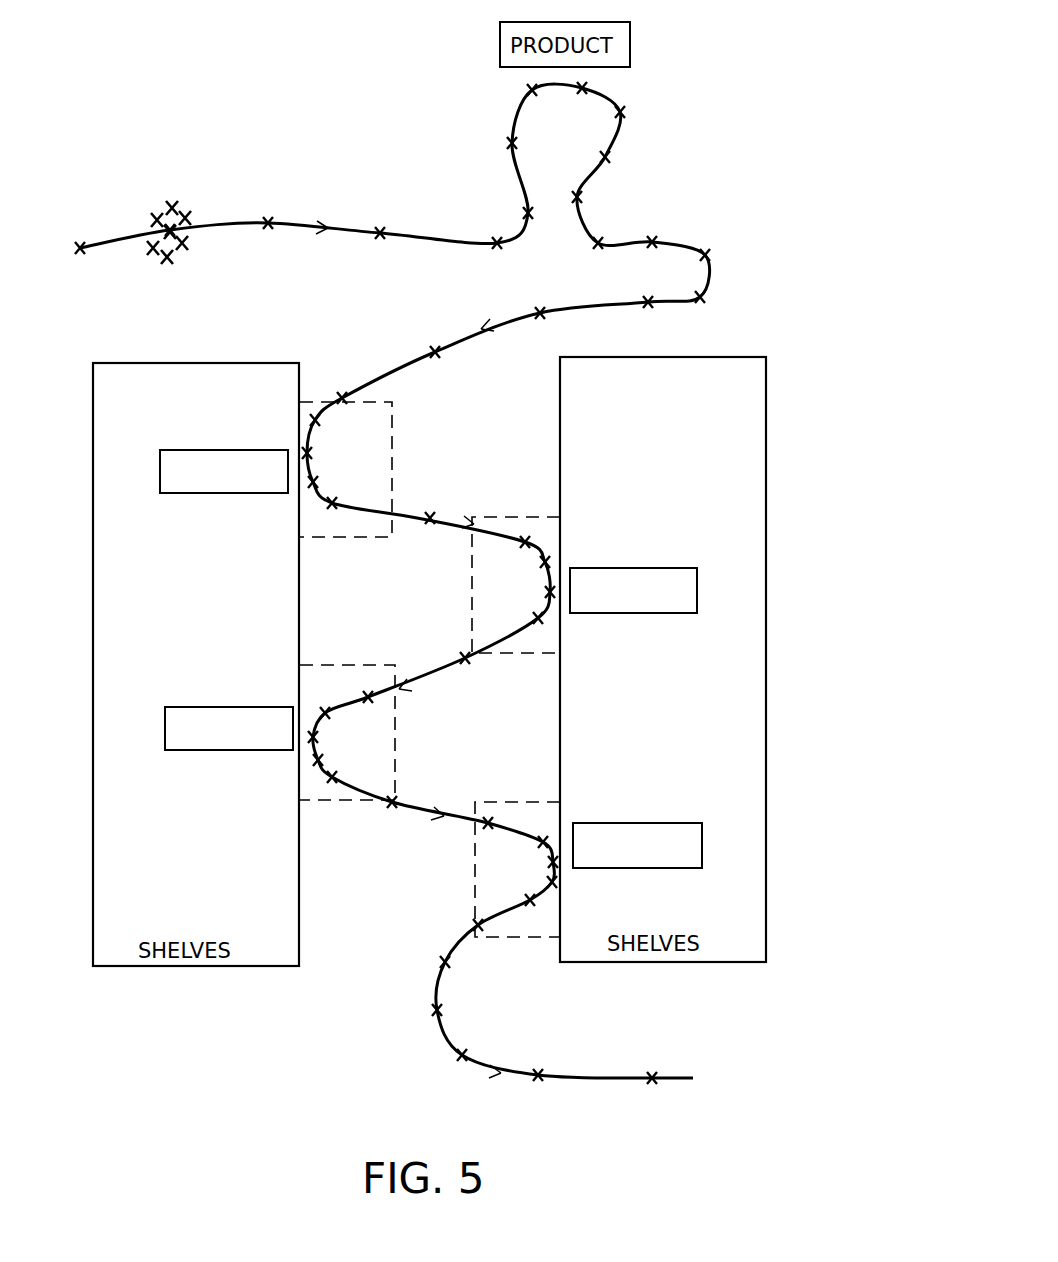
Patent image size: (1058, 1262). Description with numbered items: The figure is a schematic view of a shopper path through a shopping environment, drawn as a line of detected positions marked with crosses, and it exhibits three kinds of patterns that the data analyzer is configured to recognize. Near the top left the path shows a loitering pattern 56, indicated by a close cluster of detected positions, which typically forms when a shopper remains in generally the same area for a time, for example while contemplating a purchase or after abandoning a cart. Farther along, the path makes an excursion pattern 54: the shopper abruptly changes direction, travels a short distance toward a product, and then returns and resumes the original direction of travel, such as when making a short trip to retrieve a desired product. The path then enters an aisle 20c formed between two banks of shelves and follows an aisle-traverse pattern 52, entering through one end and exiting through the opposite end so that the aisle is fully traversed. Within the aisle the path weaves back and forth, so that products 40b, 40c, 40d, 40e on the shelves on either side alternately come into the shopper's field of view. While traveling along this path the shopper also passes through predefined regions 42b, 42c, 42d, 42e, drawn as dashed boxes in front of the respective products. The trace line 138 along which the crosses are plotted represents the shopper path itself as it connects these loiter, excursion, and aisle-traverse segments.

The aisle 20c is at (430, 665).
The product 40b is at (213, 450).
The product 40c is at (618, 567).
The product 40d is at (218, 707).
The product 40e is at (620, 823).
The predefined region 42b is at (320, 537).
The predefined region 42c is at (493, 655).
The predefined region 42d is at (323, 802).
The predefined region 42e is at (495, 938).
The aisle-traverse pattern 52 is at (370, 350).
The excursion pattern 54 is at (650, 98).
The loitering pattern 56 is at (147, 187).
The path trace line 138 is at (405, 235).